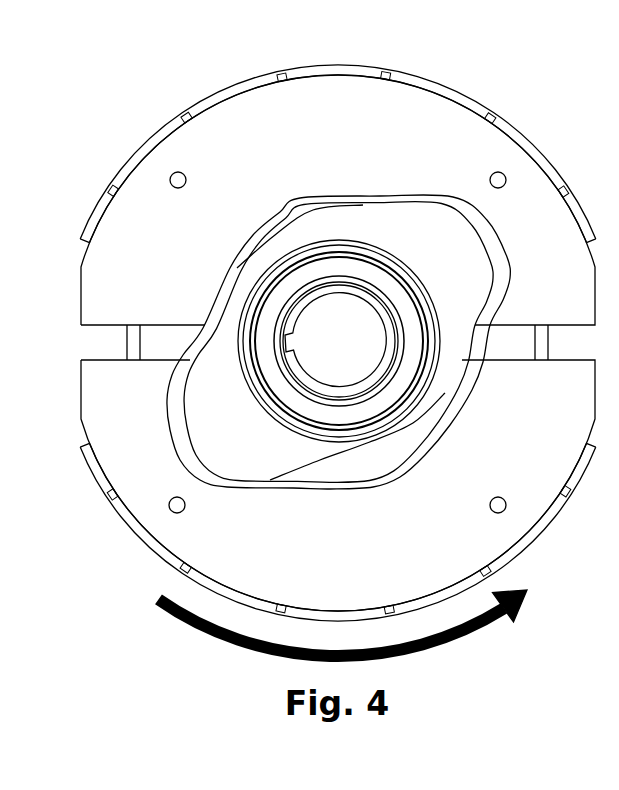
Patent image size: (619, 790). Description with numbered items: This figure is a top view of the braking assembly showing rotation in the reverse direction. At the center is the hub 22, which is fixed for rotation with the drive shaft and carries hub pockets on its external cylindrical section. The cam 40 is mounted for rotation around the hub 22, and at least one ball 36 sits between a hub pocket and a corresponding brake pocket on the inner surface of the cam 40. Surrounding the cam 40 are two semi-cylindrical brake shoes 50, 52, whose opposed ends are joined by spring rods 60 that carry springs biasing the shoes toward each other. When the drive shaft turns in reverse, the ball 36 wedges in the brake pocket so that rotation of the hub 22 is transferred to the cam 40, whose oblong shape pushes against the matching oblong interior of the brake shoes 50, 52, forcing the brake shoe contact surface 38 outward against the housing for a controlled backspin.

The hub 22 is at (260, 295).
The ball 36 is at (313, 248).
The brake shoe contact surface 38 is at (128, 525).
The cam 40 is at (448, 263).
The brake shoe 50 is at (355, 148).
The brake shoe 52 is at (363, 553).
The spring rod 60 is at (125, 357).